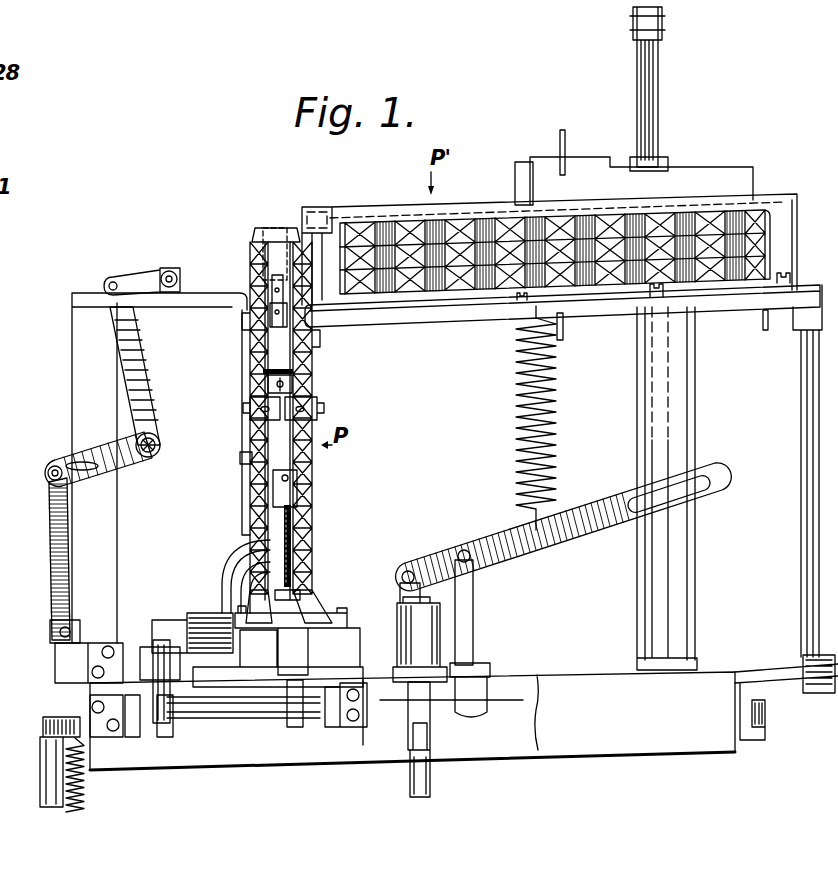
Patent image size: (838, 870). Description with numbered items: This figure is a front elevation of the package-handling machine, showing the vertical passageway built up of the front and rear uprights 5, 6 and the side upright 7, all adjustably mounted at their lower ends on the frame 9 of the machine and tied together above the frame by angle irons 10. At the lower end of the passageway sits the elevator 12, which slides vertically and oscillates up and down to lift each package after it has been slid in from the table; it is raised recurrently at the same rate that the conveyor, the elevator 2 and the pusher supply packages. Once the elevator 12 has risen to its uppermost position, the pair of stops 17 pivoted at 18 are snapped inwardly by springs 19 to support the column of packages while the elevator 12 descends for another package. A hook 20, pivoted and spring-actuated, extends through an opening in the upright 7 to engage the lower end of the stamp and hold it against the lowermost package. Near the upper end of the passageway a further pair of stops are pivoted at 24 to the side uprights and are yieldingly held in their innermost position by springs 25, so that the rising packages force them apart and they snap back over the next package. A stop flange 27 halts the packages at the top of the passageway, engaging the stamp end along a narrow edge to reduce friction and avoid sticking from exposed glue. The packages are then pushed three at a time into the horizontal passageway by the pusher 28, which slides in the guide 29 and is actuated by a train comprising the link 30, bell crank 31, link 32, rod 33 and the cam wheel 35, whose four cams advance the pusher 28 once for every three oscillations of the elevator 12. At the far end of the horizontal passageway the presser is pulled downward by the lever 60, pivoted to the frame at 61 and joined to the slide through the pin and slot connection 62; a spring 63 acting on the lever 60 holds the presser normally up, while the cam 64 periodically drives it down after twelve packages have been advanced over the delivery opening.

The elevator 2 is at (294, 798).
The front upright 5 is at (250, 432).
The rear upright 6 is at (316, 491).
The side upright 7 is at (282, 446).
The frame 9 is at (229, 748).
The angle irons 10 is at (322, 344).
The elevator 12 is at (395, 545).
The stops 17 is at (240, 578).
The pivot 18 is at (347, 598).
The springs 19 is at (235, 548).
The hook 20 is at (305, 592).
The pivot 24 is at (296, 373).
The springs 25 is at (268, 327).
The stop flange 27 is at (265, 228).
The pusher 28 is at (247, 265).
The guide 29 is at (200, 306).
The link 30 is at (135, 277).
The bell crank 31 is at (90, 448).
The link 32 is at (33, 560).
The rod 33 is at (0, 510).
The cam wheel 35 is at (45, 787).
The lever 60 is at (568, 543).
The pivot 61 is at (463, 550).
The pin and slot connection 62 is at (704, 475).
The spring 63 is at (515, 408).
The cam 64 is at (433, 770).